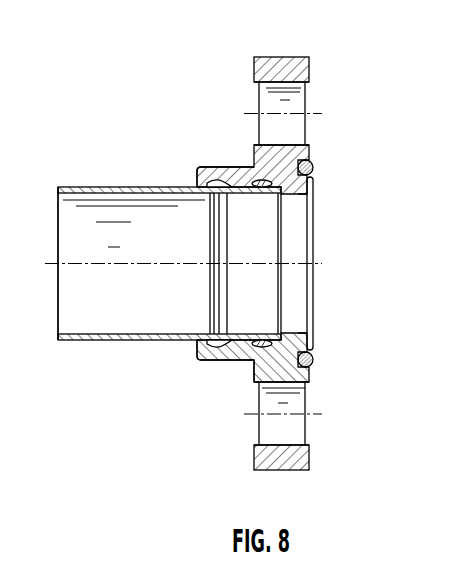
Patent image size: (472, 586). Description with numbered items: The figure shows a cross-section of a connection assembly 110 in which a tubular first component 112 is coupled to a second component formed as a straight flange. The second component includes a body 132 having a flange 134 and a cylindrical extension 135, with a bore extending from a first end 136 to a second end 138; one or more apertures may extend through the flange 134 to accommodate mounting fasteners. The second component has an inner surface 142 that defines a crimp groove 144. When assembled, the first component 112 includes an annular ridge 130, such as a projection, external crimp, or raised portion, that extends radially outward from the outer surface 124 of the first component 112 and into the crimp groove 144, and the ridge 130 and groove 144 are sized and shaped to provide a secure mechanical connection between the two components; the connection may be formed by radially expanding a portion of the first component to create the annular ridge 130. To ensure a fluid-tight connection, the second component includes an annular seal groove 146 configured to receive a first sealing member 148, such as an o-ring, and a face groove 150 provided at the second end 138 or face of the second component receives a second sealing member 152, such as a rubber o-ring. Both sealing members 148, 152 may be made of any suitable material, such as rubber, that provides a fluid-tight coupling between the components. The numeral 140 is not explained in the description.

The connection assembly 110 is at (369, 412).
The first component 112 is at (155, 187).
The outer surface 124 is at (80, 187).
The annular ridge 130 is at (210, 217).
The body 132 is at (259, 157).
The flange 134 is at (296, 68).
The cylindrical extension 135 is at (213, 355).
The first end 136 is at (197, 170).
The second end 138 is at (318, 187).
The bolt hole 140 is at (299, 101).
The inner surface 142 is at (293, 190).
The crimp groove 144 is at (218, 352).
The annular seal groove 146 is at (255, 380).
The first sealing member 148 is at (260, 340).
The face groove 150 is at (305, 337).
The second sealing member 152 is at (313, 358).